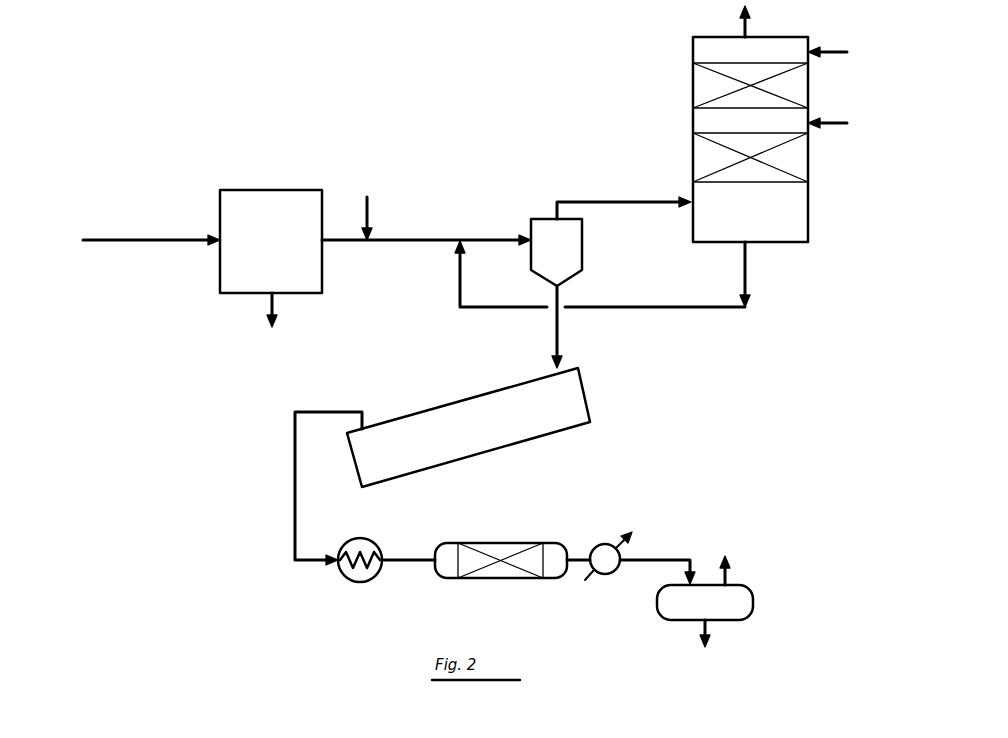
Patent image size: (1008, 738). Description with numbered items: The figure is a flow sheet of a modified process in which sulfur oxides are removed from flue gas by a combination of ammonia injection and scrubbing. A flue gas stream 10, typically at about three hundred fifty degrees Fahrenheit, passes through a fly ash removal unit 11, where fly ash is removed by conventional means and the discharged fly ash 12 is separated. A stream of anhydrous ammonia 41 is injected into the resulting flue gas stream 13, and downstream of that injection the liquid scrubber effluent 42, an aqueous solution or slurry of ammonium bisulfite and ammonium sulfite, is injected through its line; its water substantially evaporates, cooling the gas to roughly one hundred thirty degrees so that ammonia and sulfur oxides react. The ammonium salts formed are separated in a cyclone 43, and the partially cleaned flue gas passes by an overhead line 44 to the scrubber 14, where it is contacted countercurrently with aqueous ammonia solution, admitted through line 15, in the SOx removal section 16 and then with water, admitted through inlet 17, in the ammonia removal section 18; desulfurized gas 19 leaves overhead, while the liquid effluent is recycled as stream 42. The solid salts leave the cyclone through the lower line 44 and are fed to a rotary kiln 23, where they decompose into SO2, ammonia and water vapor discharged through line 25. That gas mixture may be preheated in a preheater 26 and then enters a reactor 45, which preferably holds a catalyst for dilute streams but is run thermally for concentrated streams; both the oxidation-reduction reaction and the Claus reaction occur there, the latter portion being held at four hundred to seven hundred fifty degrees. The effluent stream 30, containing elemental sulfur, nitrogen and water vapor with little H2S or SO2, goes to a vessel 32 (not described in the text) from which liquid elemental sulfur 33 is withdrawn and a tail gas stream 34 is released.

The flue gas stream 10 is at (164, 235).
The fly ash removal unit 11 is at (300, 188).
The discharged fly ash 12 is at (273, 308).
The flue gas stream 13 is at (374, 246).
The scrubber 14 is at (781, 156).
The line 15 is at (821, 120).
The SOx removal section 16 is at (808, 155).
The inlet 17 is at (821, 48).
The ammonia removal section 18 is at (808, 82).
The desulfurized gas 19 is at (750, 12).
The rotary kiln 23 is at (475, 401).
The line 25 is at (360, 412).
The preheater 26 is at (373, 540).
The effluent stream 30 is at (569, 544).
The sulfur separator 32 is at (755, 603).
The liquid elemental sulfur 33 is at (709, 630).
The tail gas stream 34 is at (730, 572).
The stream of anhydrous ammonia 41 is at (372, 217).
The liquid scrubber effluent 42 is at (458, 291).
The cyclone 43 is at (584, 240).
The overhead line 44 is at (628, 202).
The reactor 45 is at (487, 543).